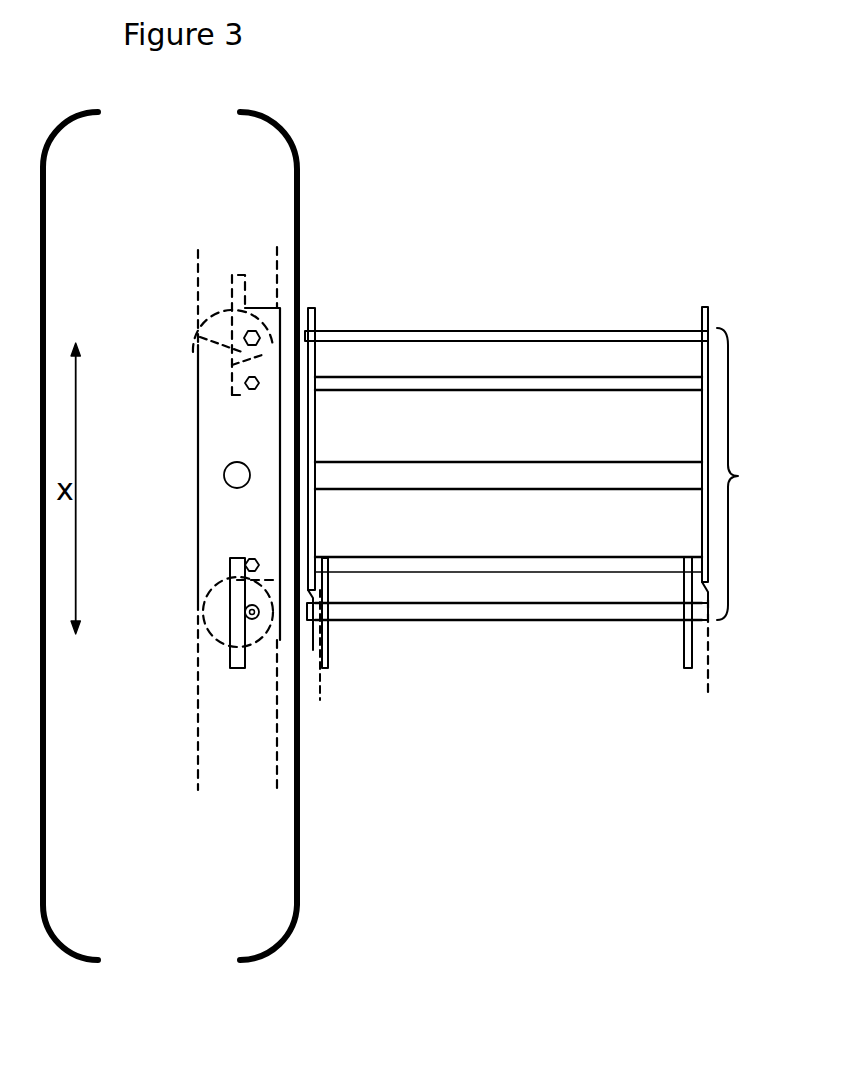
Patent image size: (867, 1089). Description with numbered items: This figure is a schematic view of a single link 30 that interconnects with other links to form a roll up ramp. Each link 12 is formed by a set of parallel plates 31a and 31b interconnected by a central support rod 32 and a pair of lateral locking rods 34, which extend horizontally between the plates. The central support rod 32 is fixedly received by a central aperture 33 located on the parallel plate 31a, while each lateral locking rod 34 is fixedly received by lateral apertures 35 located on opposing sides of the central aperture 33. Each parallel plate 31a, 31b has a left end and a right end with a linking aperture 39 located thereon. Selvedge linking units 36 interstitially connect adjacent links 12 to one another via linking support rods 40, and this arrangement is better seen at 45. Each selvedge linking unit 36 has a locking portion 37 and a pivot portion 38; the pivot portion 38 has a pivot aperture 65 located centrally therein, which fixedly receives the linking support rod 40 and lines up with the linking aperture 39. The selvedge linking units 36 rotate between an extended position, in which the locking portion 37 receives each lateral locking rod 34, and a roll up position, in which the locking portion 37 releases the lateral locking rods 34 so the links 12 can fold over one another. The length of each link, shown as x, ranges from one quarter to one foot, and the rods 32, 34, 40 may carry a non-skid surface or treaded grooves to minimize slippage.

The single link 30 is at (397, 58).
The arrangement 45 is at (142, 125).
The parallel plate 31a is at (317, 363).
The parallel plate 31b is at (711, 317).
The central support rod 32 is at (440, 472).
The lateral locking rod 34 is at (545, 376).
The linking support rod 40 is at (653, 327).
The selvedge linking unit 36 is at (328, 647).
The link 12 is at (775, 494).
The lateral aperture 35 is at (256, 392).
The central aperture 33 is at (224, 474).
The locking portion 37 is at (204, 600).
The linking aperture 39 is at (245, 610).
The pivot portion 38 is at (258, 642).
The pivot aperture 65 is at (255, 615).